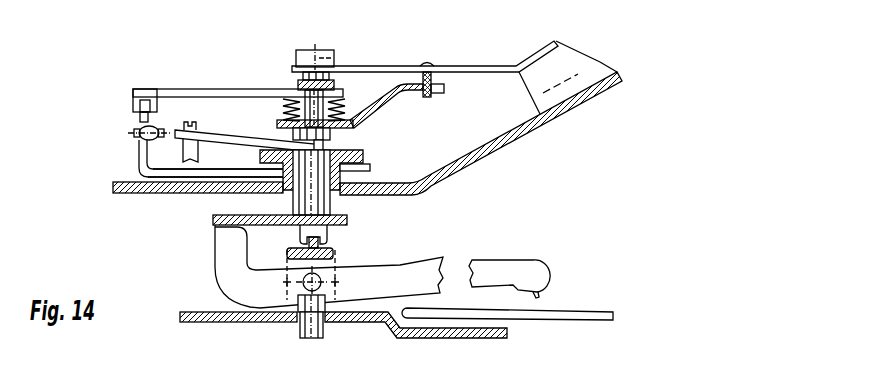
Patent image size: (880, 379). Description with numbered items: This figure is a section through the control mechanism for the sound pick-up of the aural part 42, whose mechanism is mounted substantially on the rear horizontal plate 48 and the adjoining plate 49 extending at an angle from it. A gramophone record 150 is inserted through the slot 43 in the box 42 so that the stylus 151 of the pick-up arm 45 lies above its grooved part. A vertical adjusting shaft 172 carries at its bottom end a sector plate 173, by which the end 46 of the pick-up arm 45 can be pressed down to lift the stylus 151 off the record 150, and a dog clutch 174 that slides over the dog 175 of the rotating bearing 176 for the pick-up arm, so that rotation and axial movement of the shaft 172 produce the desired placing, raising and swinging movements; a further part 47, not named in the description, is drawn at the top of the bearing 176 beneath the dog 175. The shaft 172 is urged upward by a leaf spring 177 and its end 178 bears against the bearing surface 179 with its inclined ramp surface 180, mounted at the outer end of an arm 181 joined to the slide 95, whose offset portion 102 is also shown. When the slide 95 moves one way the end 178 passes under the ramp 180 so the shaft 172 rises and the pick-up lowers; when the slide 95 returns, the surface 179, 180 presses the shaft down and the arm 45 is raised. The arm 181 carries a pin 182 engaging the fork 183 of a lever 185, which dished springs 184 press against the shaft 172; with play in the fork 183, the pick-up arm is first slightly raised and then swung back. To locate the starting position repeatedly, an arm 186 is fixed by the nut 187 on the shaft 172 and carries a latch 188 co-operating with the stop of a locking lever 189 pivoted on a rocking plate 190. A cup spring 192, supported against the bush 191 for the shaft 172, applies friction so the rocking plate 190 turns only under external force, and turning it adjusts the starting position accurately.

The inclined ramp surface 180 is at (307, 58).
The bearing surface 179 is at (300, 70).
The end of the shaft 178 is at (298, 84).
The nut 187 is at (338, 62).
The dished springs 184 is at (340, 113).
The arm 181 is at (478, 69).
The offset portion 102 is at (527, 60).
The slide 95 is at (597, 63).
The arm 186 is at (163, 90).
The latch 188 is at (133, 97).
The locking lever 189 is at (142, 157).
The rocking plate 190 is at (200, 178).
The leaf spring 177 is at (220, 140).
The lever 185 is at (393, 97).
The pin 182 is at (434, 77).
The fork 183 is at (440, 92).
The bush 191 is at (355, 153).
The cup spring 192 is at (352, 170).
The adjoining plate 49 is at (519, 134).
The rear horizontal plate 48 is at (163, 193).
The adjusting shaft 172 is at (307, 197).
The sector plate 173 is at (215, 224).
The dog clutch 174 is at (327, 238).
The dog 175 is at (303, 245).
The bar 47 is at (333, 255).
The end of the pick-up arm 46 is at (225, 250).
The aural part 42 is at (210, 323).
The slot 43 is at (452, 322).
The rotating bearing 176 is at (348, 323).
The gramophone record 150 is at (523, 317).
The pick-up arm 45 is at (522, 273).
The stylus 151 is at (538, 296).